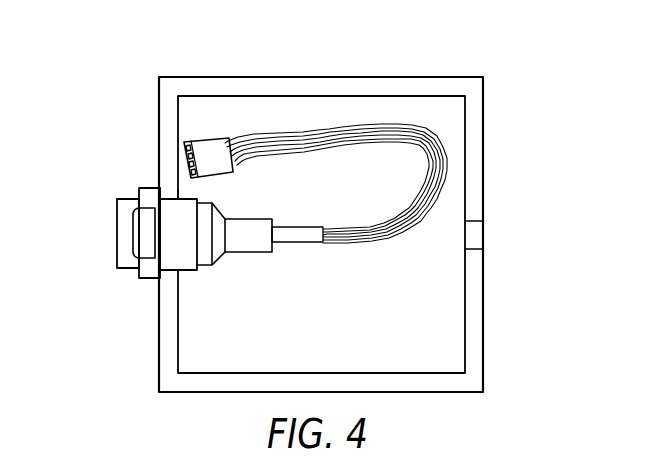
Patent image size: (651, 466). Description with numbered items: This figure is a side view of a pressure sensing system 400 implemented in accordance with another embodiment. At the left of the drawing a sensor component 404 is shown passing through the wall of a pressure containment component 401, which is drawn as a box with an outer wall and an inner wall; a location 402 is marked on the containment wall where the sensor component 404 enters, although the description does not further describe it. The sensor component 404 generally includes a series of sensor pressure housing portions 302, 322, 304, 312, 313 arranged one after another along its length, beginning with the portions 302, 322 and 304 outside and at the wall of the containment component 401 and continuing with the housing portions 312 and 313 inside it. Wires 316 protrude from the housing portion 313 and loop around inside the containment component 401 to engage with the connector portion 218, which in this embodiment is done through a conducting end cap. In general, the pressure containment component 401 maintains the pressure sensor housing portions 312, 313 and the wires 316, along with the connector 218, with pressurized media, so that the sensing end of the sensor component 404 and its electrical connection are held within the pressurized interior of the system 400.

The pressure sensing system 400 is at (335, 210).
The pressure containment component 401 is at (307, 86).
The opening in housing wall 402 is at (170, 186).
The sensor component 404 is at (107, 250).
The connector portion 218 is at (207, 157).
The sensor pressure housing portion 302 is at (127, 262).
The sensor pressure housing portion 304 is at (152, 278).
The sensor pressure housing portion 312 is at (213, 267).
The sensor pressure housing portion 313 is at (252, 231).
The wires 316 is at (367, 247).
The sensor pressure housing portion 322 is at (142, 238).